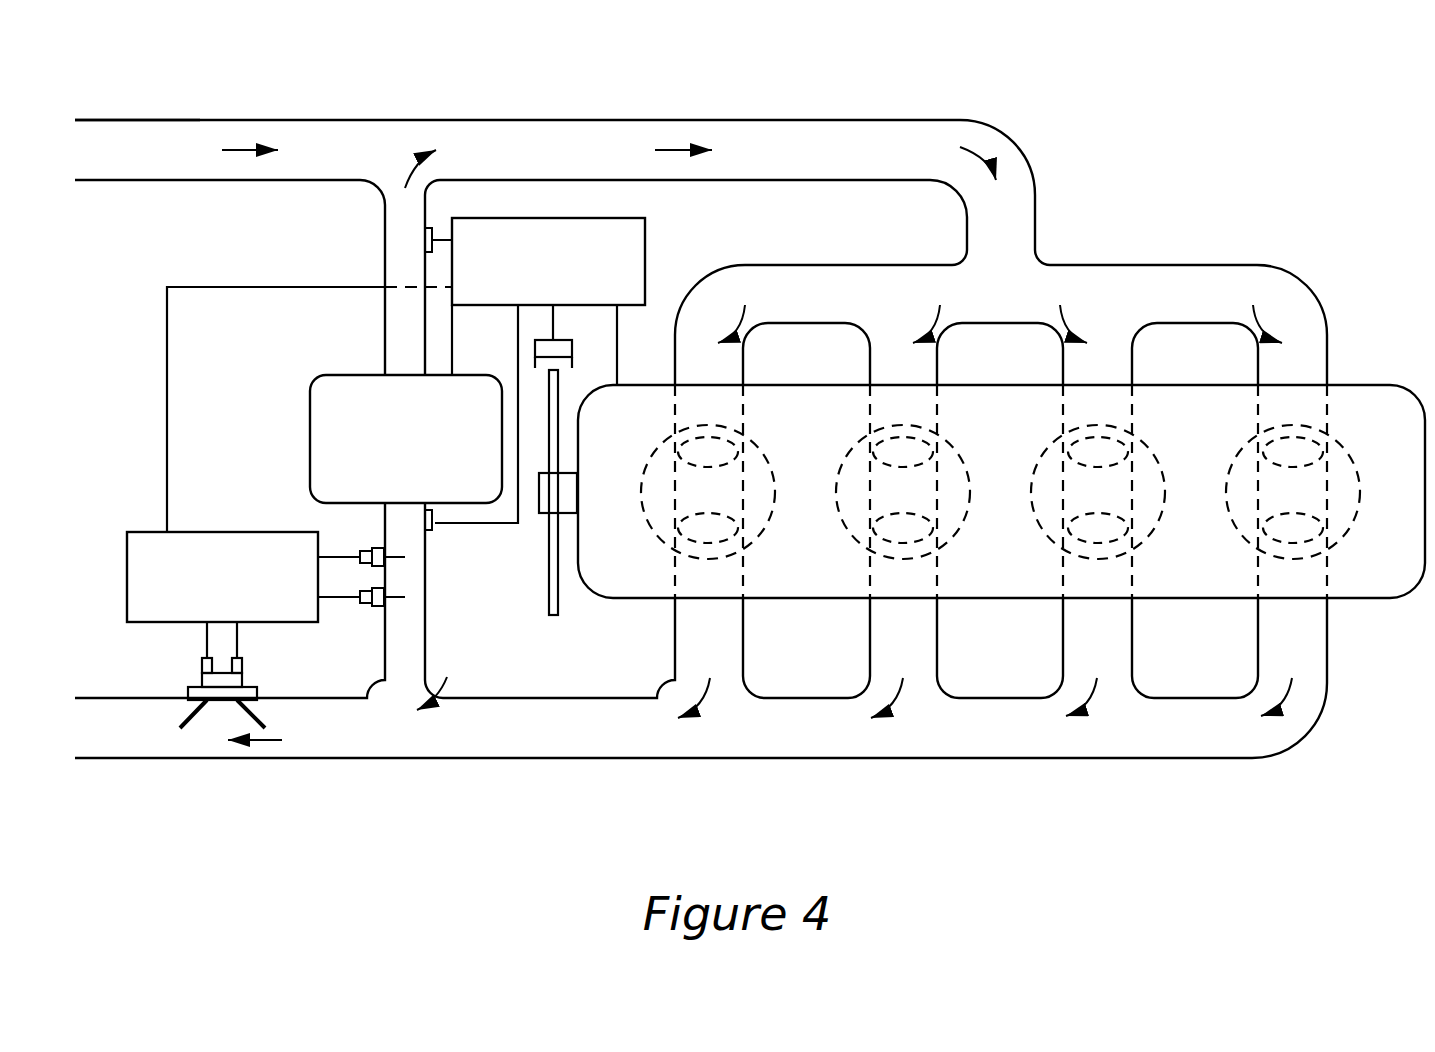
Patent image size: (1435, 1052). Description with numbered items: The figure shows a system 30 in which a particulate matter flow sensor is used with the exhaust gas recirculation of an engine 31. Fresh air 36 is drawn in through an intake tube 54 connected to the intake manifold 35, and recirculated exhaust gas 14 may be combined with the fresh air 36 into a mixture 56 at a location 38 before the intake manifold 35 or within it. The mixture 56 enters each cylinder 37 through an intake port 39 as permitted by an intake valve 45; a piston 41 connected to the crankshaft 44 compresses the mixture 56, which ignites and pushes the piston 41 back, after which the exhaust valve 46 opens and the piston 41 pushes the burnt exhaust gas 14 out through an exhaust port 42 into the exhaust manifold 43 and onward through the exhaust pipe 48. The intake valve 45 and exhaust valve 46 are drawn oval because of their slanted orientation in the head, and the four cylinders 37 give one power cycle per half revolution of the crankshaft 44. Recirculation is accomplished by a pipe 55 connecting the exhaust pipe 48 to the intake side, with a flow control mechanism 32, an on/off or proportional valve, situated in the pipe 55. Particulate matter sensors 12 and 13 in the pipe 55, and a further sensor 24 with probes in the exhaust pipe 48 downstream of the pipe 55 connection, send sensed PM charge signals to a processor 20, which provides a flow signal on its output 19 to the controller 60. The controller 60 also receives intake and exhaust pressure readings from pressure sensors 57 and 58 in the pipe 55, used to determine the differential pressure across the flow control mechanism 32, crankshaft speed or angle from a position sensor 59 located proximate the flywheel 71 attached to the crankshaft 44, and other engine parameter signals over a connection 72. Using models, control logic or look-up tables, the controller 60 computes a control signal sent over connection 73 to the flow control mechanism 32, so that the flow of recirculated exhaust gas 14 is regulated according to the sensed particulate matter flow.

The particulate matter sensor 12 is at (372, 607).
The particulate matter sensor 13 is at (362, 552).
The exhaust gas 14 is at (405, 185).
The output 19 is at (265, 288).
The processor 20 is at (127, 566).
The sensor 24 is at (205, 690).
The system 30 is at (1160, 136).
The engine 31 is at (1365, 385).
The flow control mechanism 32 is at (310, 415).
The intake manifold 35 is at (1190, 265).
The fresh air 36 is at (245, 148).
The cylinder 37 is at (659, 449).
The location 38 is at (502, 159).
The intake port 39 is at (737, 408).
The piston 41 is at (725, 500).
The exhaust port 42 is at (688, 578).
The exhaust manifold 43 is at (1105, 760).
The crankshaft 44 is at (540, 513).
The intake valve 45 is at (694, 466).
The exhaust valve 46 is at (722, 516).
The exhaust pipe 48 is at (373, 762).
The intake tube 54 is at (178, 182).
The pipe 55 is at (385, 258).
The mixture 56 is at (682, 148).
The pressure sensor 57 is at (432, 230).
The pressure sensor 58 is at (432, 530).
The position sensor 59 is at (568, 340).
The controller 60 is at (646, 232).
The flywheel 71 is at (549, 612).
The connection 72 is at (619, 357).
The connection 73 is at (454, 356).